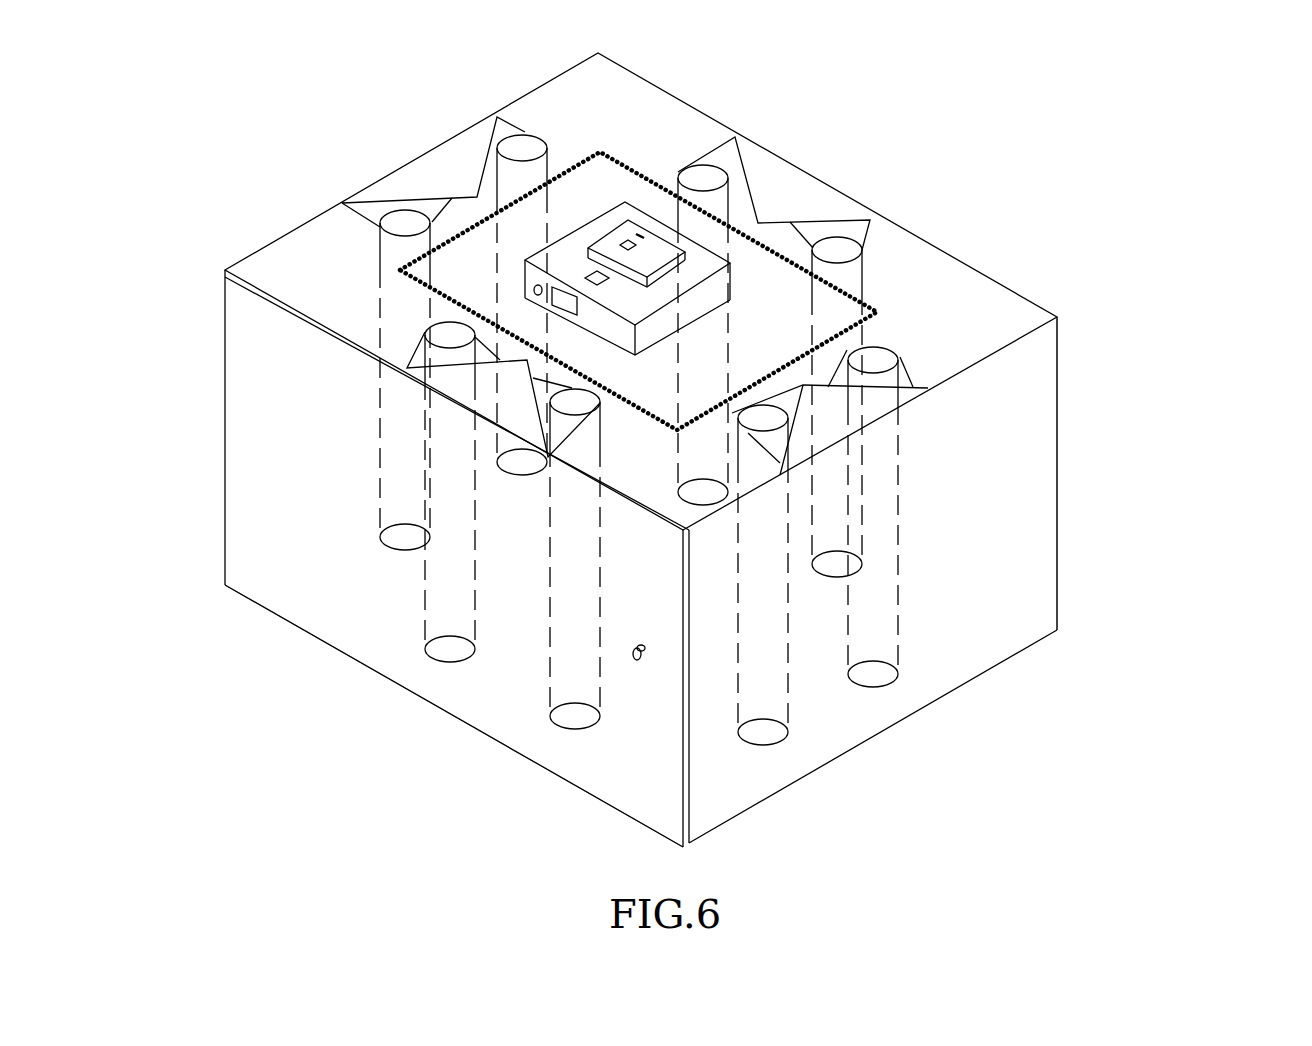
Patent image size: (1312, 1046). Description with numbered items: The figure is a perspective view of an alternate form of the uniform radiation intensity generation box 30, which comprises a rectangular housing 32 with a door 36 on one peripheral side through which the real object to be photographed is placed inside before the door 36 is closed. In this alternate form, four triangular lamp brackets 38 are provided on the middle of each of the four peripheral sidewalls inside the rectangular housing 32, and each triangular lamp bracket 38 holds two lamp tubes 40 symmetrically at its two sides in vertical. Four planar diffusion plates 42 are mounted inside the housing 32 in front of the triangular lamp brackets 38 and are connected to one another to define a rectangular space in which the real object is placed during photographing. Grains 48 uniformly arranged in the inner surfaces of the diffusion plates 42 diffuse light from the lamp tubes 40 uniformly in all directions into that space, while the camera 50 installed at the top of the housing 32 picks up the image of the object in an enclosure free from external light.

The uniform radiation intensity generation box 30 is at (1180, 187).
The rectangular housing 32 is at (1060, 497).
The door 36 is at (370, 605).
The triangular lamp bracket 38 is at (780, 185).
The lamp tube 40 is at (838, 248).
The diffusion plate 42 is at (877, 312).
The grains 48 is at (782, 362).
The camera 50 is at (627, 212).